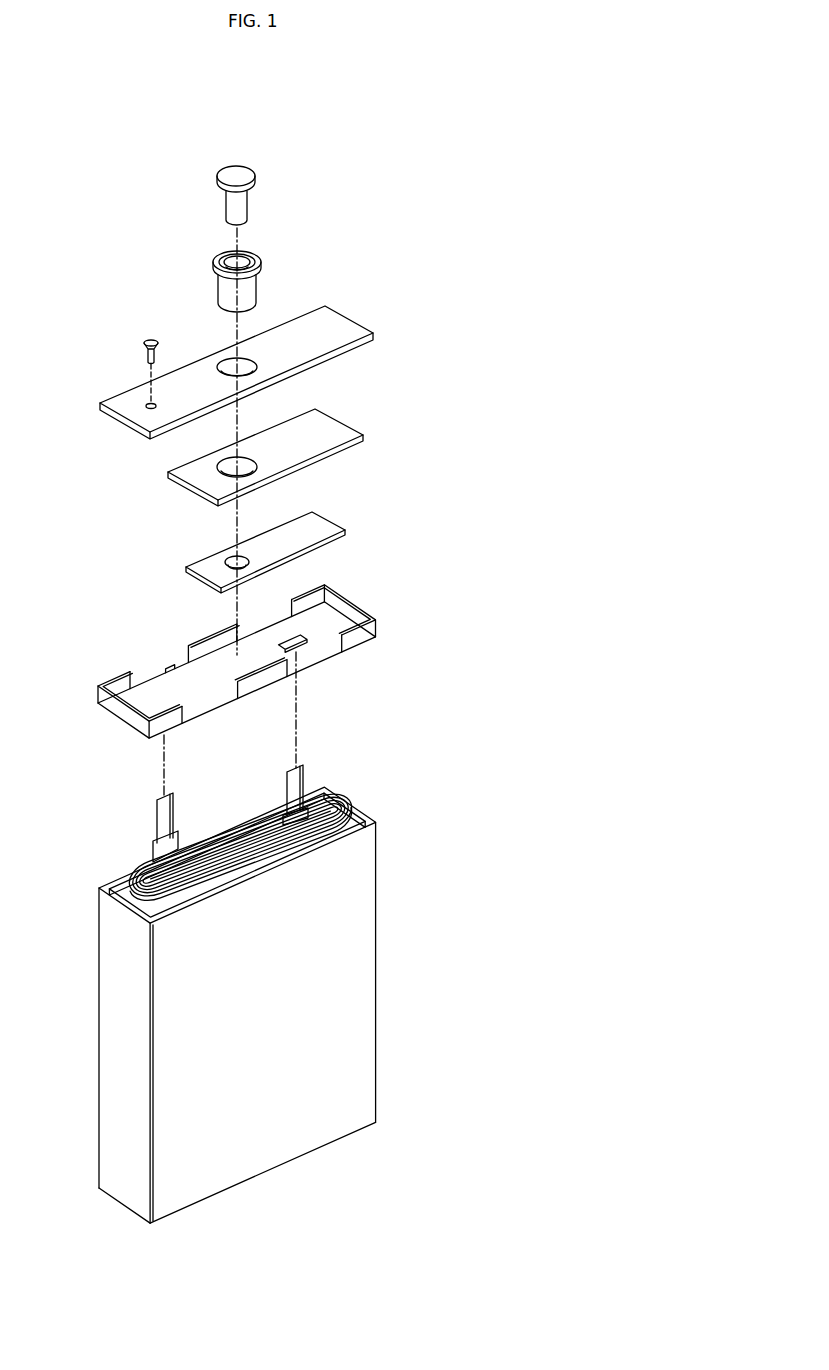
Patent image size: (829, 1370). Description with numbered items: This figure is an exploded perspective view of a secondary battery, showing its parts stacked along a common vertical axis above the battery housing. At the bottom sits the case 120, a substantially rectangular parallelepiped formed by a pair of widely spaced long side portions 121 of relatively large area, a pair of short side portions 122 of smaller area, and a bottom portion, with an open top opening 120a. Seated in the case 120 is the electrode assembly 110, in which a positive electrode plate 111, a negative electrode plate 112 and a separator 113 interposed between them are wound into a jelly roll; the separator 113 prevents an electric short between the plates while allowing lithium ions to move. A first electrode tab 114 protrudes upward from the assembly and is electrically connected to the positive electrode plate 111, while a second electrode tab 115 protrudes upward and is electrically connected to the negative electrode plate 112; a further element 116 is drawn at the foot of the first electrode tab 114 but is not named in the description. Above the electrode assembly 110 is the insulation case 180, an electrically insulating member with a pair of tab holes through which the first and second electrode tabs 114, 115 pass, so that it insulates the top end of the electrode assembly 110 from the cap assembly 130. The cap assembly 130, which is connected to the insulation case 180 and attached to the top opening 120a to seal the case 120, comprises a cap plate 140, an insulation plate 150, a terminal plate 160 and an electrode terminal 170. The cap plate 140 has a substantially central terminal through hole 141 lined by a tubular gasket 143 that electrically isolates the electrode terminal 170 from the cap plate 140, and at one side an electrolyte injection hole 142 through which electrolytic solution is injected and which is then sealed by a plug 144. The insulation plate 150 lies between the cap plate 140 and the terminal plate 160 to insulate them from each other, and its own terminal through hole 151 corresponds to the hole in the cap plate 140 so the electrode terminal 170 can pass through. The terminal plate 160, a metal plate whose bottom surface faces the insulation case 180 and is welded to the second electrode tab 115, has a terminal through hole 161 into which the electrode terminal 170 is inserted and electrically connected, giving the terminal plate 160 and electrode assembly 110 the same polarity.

The electrode assembly 110 is at (269, 806).
The positive electrode plate 111 is at (345, 800).
The negative electrode plate 112 is at (325, 797).
The separator 113 is at (337, 797).
The first electrode tab 114 is at (168, 818).
The second electrode tab 115 is at (295, 785).
The tab base 116 is at (160, 849).
The case 120 is at (249, 1005).
The top opening 120a is at (373, 817).
The long side portions 121 is at (293, 1160).
The short side portions 122 is at (120, 1204).
The cap assembly 130 is at (438, 192).
The cap plate 140 is at (252, 359).
The terminal through hole 141 is at (224, 362).
The electrolyte injection hole 142 is at (148, 404).
The gasket 143 is at (214, 251).
The plug 144 is at (147, 341).
The insulation plate 150 is at (276, 456).
The terminal through hole 151 is at (215, 469).
The terminal plate 160 is at (276, 529).
The terminal through hole 161 is at (232, 557).
The electrode terminal 170 is at (250, 176).
The insulation case 180 is at (104, 700).